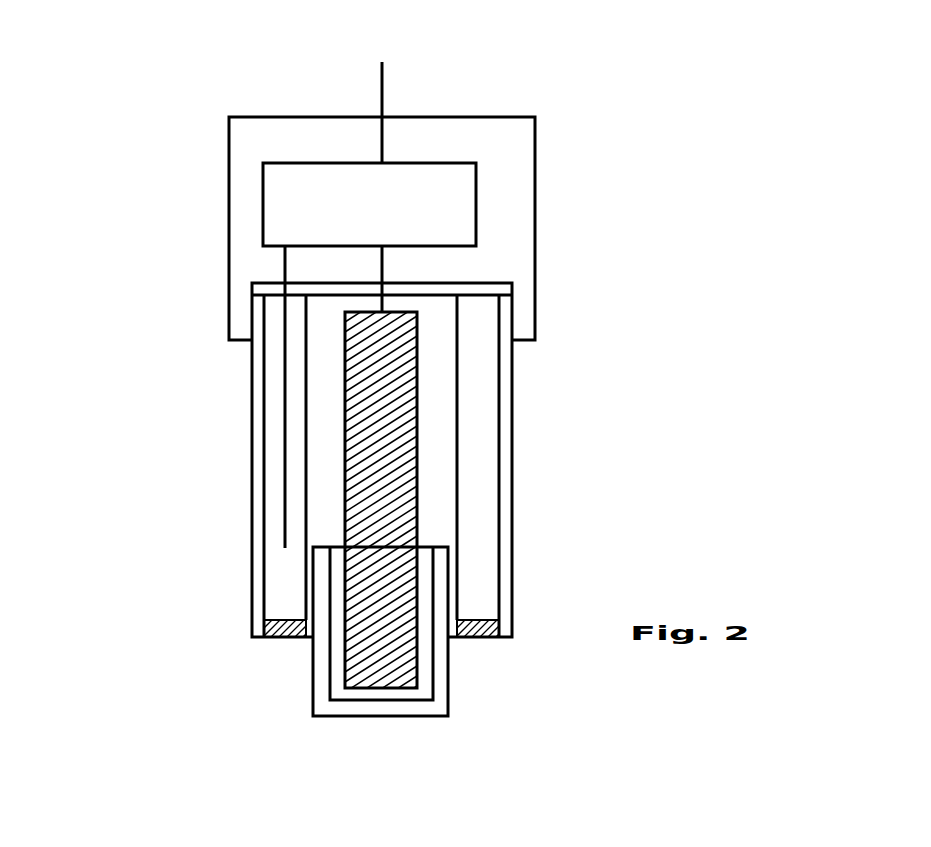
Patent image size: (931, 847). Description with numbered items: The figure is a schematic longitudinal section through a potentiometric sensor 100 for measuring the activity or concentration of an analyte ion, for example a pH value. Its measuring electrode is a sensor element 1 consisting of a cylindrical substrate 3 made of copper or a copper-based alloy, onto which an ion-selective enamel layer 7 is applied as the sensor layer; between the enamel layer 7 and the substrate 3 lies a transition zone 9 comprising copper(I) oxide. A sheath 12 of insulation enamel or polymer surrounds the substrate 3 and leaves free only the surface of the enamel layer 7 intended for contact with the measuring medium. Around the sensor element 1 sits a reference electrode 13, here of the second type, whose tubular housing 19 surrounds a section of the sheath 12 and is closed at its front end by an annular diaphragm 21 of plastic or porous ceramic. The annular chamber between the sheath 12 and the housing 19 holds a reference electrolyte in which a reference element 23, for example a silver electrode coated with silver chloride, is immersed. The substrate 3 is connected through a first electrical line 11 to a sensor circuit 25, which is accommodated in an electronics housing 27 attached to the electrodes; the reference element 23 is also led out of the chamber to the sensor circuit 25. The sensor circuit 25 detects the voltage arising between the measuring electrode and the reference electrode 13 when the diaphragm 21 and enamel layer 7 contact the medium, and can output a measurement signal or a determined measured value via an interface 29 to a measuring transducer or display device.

The potentiometric sensor 100 is at (665, 193).
The sensor element 1 is at (417, 402).
The substrate 3 is at (417, 513).
The ion-selective enamel layer 7 is at (440, 708).
The transition zone 9 is at (433, 668).
The first electrical line 11 is at (383, 270).
The sheath 12 is at (437, 458).
The reference electrode 13 is at (275, 403).
The tubular housing 19 is at (250, 470).
The annular diaphragm 21 is at (285, 638).
The reference element 23 is at (285, 523).
The sensor circuit 25 is at (307, 187).
The electronics housing 27 is at (535, 150).
The interface 29 is at (382, 80).